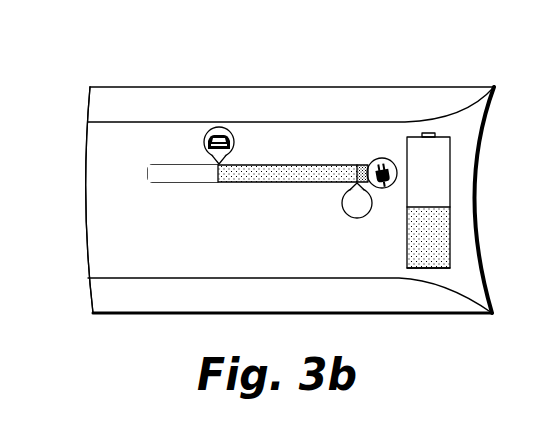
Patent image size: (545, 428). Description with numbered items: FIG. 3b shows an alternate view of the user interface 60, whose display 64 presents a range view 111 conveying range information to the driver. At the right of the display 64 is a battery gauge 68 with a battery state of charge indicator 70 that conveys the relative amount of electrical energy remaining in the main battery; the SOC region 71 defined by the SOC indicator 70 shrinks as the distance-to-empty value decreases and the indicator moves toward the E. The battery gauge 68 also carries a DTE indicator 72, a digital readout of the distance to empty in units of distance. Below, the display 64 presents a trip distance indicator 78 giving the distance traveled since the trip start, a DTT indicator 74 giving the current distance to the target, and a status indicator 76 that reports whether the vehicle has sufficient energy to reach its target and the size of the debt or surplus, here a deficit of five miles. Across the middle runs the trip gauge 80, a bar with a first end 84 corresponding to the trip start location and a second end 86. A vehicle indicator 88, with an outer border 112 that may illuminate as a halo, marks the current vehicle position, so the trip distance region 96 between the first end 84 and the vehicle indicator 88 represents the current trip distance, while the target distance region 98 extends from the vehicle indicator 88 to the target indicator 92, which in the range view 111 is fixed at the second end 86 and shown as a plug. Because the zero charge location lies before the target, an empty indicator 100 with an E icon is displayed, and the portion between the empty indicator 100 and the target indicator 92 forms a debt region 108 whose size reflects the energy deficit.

The user interface 60 is at (86, 44).
The display 64 is at (84, 288).
The battery gauge 68 is at (444, 133).
The battery state of charge indicator 70 is at (449, 206).
The SOC region 71 is at (432, 267).
The DTE indicator 72 is at (452, 228).
The DTT indicator 74 is at (259, 286).
The status indicator 76 is at (360, 289).
The trip distance indicator 78 is at (173, 286).
The trip gauge 80 is at (97, 168).
The first end 84 is at (147, 173).
The second end 86 is at (368, 165).
The vehicle indicator 88 is at (204, 143).
The target indicator 92 is at (383, 158).
The trip distance region 96 is at (180, 170).
The target distance region 98 is at (292, 167).
The empty indicator 100 is at (342, 203).
The debt region 108 is at (363, 167).
The range view 111 is at (120, 212).
The outer border 112 is at (180, 170).